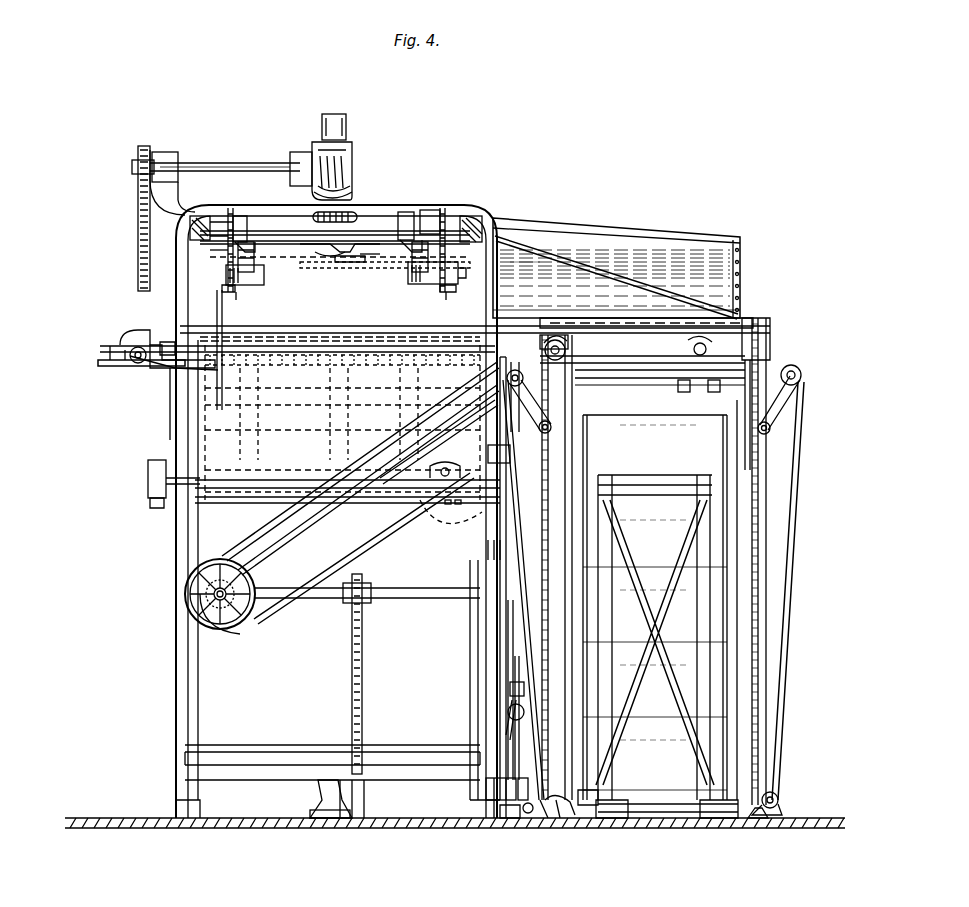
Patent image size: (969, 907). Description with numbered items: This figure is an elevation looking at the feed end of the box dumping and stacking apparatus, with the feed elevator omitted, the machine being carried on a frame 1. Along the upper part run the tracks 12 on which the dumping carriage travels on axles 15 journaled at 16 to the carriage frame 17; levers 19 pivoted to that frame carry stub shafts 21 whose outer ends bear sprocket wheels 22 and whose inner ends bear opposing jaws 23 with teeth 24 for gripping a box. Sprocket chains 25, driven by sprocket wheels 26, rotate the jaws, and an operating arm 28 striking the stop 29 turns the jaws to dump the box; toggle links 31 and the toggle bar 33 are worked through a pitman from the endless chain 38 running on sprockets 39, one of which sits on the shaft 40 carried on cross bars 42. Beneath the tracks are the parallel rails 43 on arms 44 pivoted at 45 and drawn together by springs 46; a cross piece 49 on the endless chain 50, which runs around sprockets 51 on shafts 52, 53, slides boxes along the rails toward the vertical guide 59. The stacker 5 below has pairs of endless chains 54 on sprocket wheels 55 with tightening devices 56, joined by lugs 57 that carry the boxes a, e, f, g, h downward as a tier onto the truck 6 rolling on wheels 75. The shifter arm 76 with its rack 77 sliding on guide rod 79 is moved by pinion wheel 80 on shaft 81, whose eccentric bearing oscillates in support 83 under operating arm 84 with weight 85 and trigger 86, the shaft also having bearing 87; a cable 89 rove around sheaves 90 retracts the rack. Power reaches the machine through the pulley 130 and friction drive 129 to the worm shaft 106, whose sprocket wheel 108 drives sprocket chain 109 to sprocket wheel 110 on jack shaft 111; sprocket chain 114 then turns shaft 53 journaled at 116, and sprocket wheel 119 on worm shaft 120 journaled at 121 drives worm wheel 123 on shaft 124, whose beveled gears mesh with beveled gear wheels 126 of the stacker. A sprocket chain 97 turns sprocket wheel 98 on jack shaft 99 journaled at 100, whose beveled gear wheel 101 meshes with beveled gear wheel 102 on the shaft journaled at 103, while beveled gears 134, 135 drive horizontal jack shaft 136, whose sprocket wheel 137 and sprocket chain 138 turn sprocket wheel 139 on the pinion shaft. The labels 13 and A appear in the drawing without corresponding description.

The frame 1 is at (172, 708).
The stacker 5 is at (735, 533).
The truck 6 is at (712, 597).
The tracks 12 is at (500, 222).
The bearing bracket 13 is at (490, 212).
The axles 15 is at (252, 225).
The journals 16 is at (412, 186).
The carriage frame 17 is at (372, 259).
The levers 19 is at (415, 270).
The stub shafts 21 is at (458, 272).
The sprocket wheels 22 is at (446, 292).
The jaws 23 is at (262, 330).
The teeth 24 is at (408, 274).
The sprocket chains 25 is at (215, 252).
The sprocket wheels 26 is at (455, 210).
The operating arm 28 is at (218, 368).
The stop 29 is at (172, 400).
The toggle links 31 is at (330, 252).
The toggle bar 33 is at (350, 256).
The endless chain 38 is at (335, 227).
The sprockets 39 is at (358, 218).
The shaft 40 is at (338, 115).
The cross bars 42 is at (433, 208).
The rails 43 is at (745, 344).
The arms 44 is at (515, 318).
The pivots 45 is at (510, 448).
The springs 46 is at (255, 362).
The cross piece 49 is at (195, 367).
The endless chain 50 is at (132, 345).
The sprockets 51 is at (560, 335).
The shaft 52 is at (125, 348).
The shaft 53 is at (572, 352).
The endless chains 54 is at (498, 508).
The sprocket wheels 55 is at (568, 810).
The tightening devices 56 is at (795, 392).
The lugs 57 is at (752, 808).
The vertical guide 59 is at (525, 283).
The wheels 75 is at (712, 812).
The shifter arm 76 is at (596, 805).
The rack 77 is at (508, 818).
The guide rod 79 is at (528, 818).
The pinion wheel 80 is at (520, 775).
The shaft 81 is at (458, 790).
The support 83 is at (505, 796).
The operating arm 84 is at (515, 664).
The weight 85 is at (505, 714).
The trigger 86 is at (552, 820).
The bearing 87 is at (322, 803).
The cable 89 is at (509, 655).
The sheaves 90 is at (488, 552).
The sprocket chain 97 is at (138, 223).
The sprocket wheel 98 is at (146, 146).
The jack shaft 99 is at (245, 163).
The journal 100 is at (300, 126).
The beveled gear wheel 101 is at (348, 152).
The beveled gear wheel 102 is at (352, 178).
The journal 103 is at (352, 188).
The worm shaft 106 is at (450, 478).
The sprocket wheel 108 is at (400, 475).
The sprocket chain 109 is at (350, 566).
The sprocket wheel 110 is at (245, 628).
The jack shaft 111 is at (185, 596).
The sprocket chain 114 is at (298, 545).
The journal 116 is at (615, 318).
The sprocket wheel 119 is at (712, 349).
The worm shaft 120 is at (688, 348).
The journal 121 is at (686, 390).
The worm wheel 123 is at (716, 392).
The shaft 124 is at (632, 380).
The beveled gear wheels 126 is at (148, 488).
The friction drive 129 is at (462, 534).
The pulley 130 is at (148, 500).
The beveled gear 134 is at (222, 555).
The beveled gear 135 is at (272, 610).
The horizontal jack shaft 136 is at (415, 592).
The sprocket wheel 137 is at (364, 576).
The sprocket chain 138 is at (372, 682).
The sprocket wheel 139 is at (366, 800).
The direction arrow A is at (222, 412).
The box h is at (644, 444).
The box g is at (638, 529).
The box f is at (638, 600).
The box e is at (638, 679).
The box a is at (638, 750).